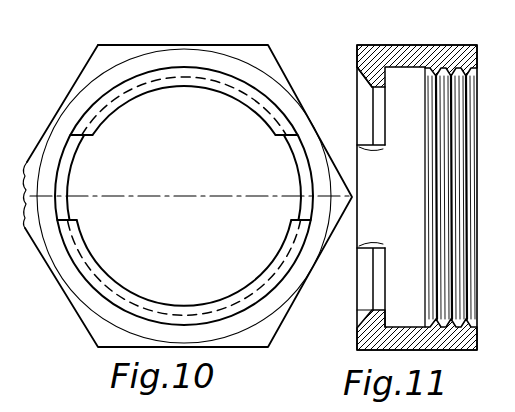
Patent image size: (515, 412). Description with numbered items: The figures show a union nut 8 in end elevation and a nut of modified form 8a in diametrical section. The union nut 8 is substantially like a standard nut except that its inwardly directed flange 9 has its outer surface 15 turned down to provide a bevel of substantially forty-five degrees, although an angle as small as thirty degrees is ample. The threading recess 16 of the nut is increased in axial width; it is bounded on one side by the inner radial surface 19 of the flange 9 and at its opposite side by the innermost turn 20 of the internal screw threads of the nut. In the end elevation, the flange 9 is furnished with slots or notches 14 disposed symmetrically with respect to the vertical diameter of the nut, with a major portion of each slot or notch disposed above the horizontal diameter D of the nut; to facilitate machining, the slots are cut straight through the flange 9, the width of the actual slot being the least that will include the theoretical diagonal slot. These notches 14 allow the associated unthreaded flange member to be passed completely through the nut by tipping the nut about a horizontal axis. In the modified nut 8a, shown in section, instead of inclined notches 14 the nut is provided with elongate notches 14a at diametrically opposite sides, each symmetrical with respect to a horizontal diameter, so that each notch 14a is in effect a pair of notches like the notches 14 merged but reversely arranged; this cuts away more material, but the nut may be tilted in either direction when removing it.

In FIG. 10, the union nut 8 is at (199, 41).
In FIG. 11, the nut of modified form 8a is at (449, 44).
In FIG. 11, the inwardly directed flange 9 is at (384, 81).
In FIG. 10, the slots or notches 14 is at (78, 181).
In FIG. 11, the elongate notches 14a is at (357, 162).
In FIG. 10, the outer surface of the flange 15 is at (245, 87).
In FIG. 11, the outer surface of the flange 15 is at (363, 78).
In FIG. 11, the threading recess 16 is at (398, 78).
In FIG. 11, the inner radial surface of the flange 19 is at (392, 318).
In FIG. 10, the innermost turn of the internal screw threads 20 is at (298, 169).
In FIG. 11, the innermost turn of the internal screw threads 20 is at (418, 70).
In FIG. 10, the horizontal diameter D is at (198, 198).